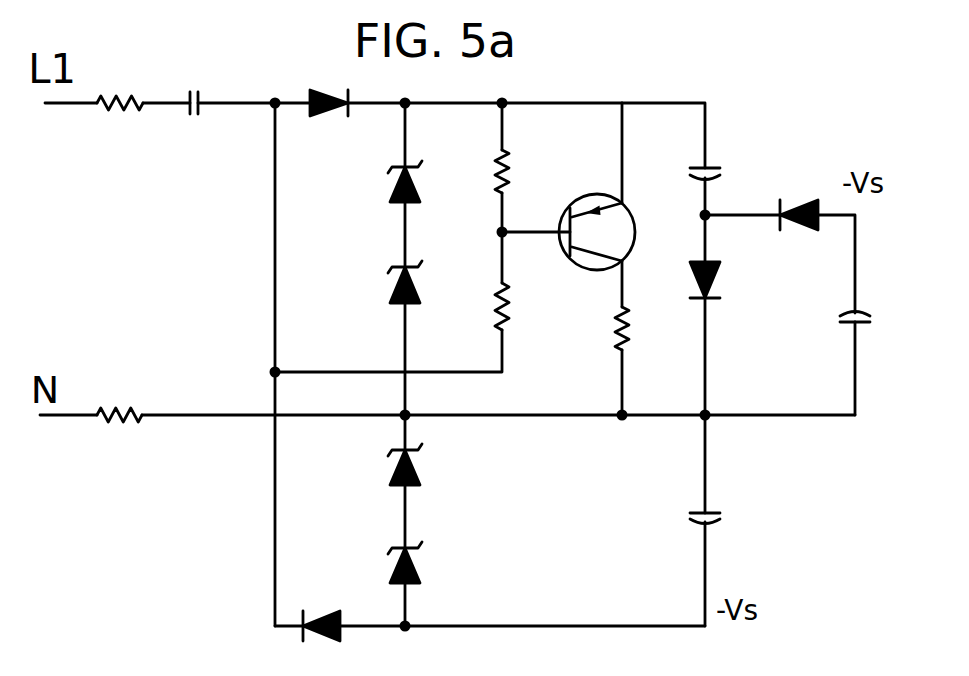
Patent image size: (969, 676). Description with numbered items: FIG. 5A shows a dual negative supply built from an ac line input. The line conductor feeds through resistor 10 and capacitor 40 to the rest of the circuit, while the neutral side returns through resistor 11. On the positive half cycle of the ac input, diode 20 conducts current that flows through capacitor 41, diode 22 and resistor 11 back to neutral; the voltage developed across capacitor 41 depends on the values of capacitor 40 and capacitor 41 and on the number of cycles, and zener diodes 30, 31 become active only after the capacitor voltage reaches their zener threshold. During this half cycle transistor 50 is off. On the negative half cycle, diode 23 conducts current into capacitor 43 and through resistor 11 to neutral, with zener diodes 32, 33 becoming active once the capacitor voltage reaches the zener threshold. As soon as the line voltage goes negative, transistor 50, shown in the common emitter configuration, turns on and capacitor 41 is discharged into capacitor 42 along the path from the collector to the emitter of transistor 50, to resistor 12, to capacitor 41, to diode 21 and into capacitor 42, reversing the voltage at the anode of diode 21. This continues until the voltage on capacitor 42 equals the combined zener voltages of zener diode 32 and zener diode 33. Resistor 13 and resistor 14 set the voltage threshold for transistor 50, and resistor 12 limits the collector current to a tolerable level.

The resistor (L1 line) 10 is at (120, 123).
The resistor 11 is at (119, 399).
The resistor 12 is at (600, 328).
The resistor 13 is at (480, 171).
The resistor 14 is at (480, 306).
The diode 20 is at (329, 120).
The diode 21 is at (797, 232).
The diode 22 is at (726, 280).
The diode 23 is at (321, 643).
The zener diode 30 is at (383, 182).
The zener diode 31 is at (383, 282).
The zener diode 32 is at (383, 465).
The zener diode 33 is at (383, 564).
The capacitor 40 is at (195, 121).
The capacitor 41 is at (723, 164).
The capacitor 42 is at (841, 324).
The capacitor 43 is at (686, 511).
The transistor 50 is at (600, 224).